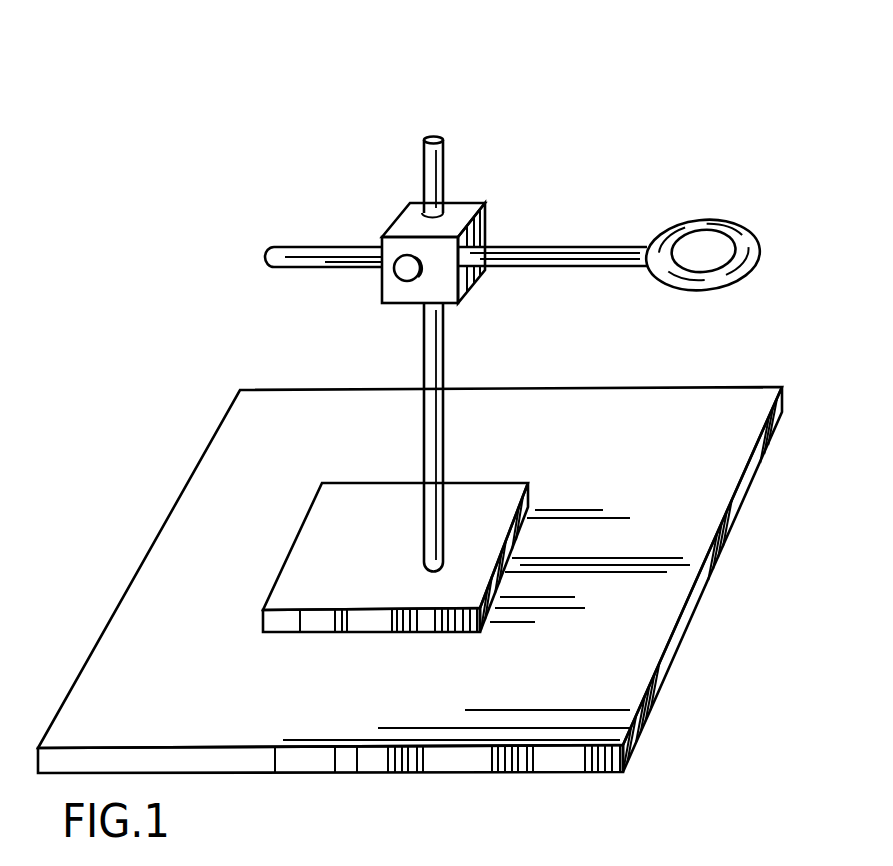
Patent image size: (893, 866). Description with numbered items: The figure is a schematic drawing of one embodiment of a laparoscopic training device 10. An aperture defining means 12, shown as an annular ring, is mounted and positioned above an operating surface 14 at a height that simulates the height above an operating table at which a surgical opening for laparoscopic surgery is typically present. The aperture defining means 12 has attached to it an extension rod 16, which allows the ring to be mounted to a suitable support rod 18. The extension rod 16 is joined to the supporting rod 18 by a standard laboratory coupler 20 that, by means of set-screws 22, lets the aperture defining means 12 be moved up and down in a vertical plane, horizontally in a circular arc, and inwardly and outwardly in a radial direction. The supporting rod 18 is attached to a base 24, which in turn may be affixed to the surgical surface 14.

The laparoscopic training device 10 is at (285, 120).
The aperture defining means 12 is at (702, 218).
The operating surface 14 is at (235, 475).
The extension rod 16 is at (585, 247).
The support rod 18 is at (423, 160).
The laboratory coupler 20 is at (468, 212).
The set-screws 22 is at (400, 262).
The base 24 is at (382, 517).